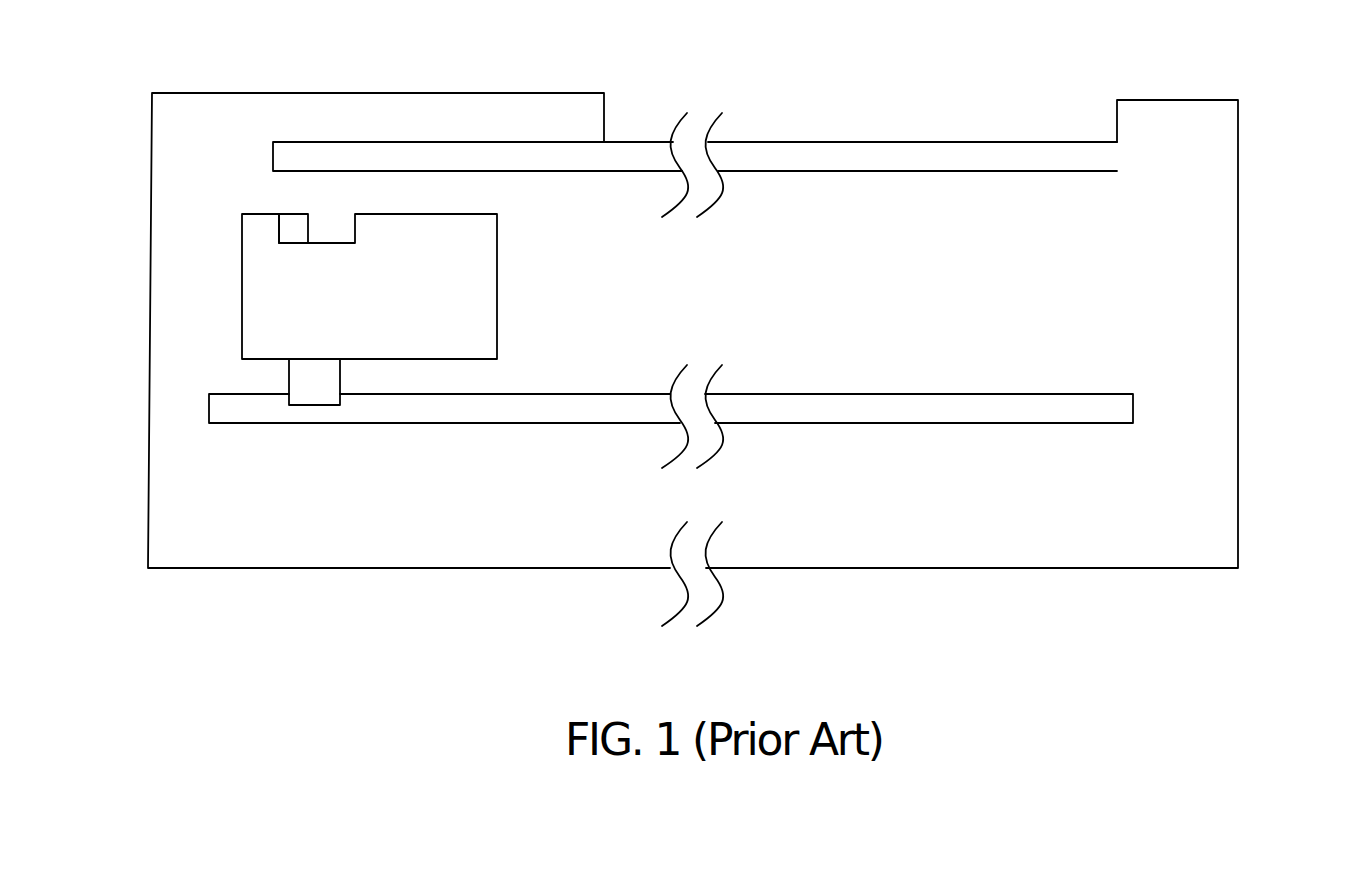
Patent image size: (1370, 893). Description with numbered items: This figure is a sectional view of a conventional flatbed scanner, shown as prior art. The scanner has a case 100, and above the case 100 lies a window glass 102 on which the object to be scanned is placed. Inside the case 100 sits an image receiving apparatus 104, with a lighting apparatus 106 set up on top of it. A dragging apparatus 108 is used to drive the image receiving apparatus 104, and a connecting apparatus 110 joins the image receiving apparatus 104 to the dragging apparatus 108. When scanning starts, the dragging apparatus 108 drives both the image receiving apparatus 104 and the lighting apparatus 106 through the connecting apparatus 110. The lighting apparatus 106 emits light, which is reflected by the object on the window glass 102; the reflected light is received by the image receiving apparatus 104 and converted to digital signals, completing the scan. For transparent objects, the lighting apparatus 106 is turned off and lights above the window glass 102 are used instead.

The case 100 is at (1238, 233).
The window glass 102 is at (1037, 157).
The image receiving apparatus 104 is at (253, 322).
The lighting apparatus 106 is at (298, 222).
The dragging apparatus 108 is at (1078, 413).
The connecting apparatus 110 is at (310, 405).